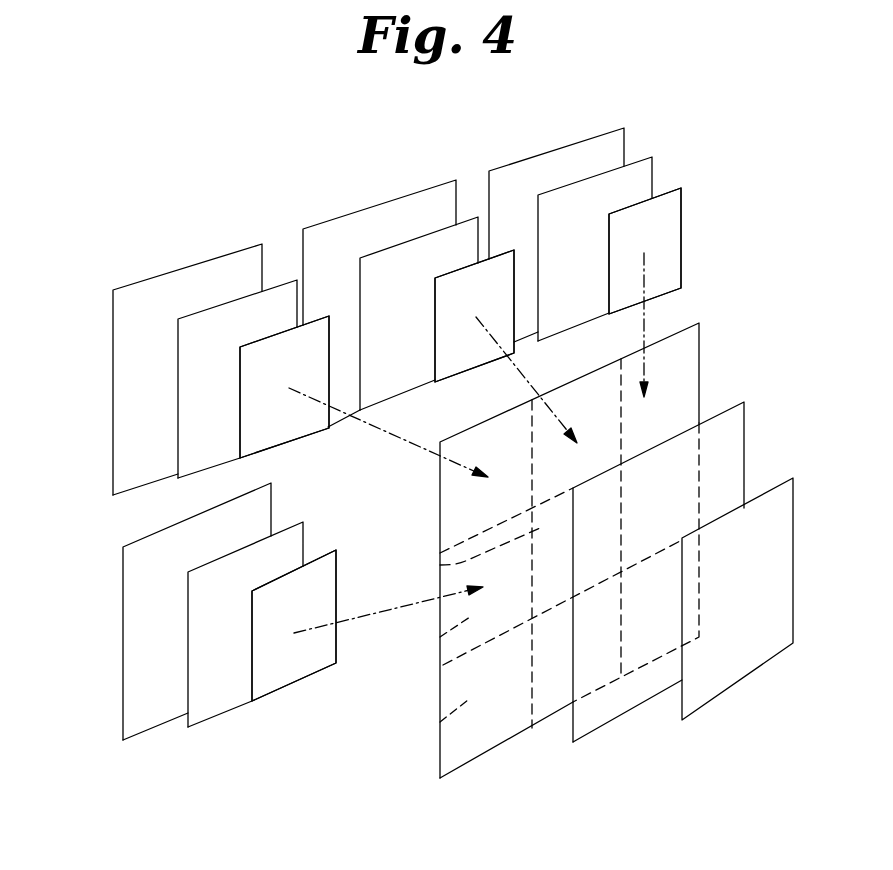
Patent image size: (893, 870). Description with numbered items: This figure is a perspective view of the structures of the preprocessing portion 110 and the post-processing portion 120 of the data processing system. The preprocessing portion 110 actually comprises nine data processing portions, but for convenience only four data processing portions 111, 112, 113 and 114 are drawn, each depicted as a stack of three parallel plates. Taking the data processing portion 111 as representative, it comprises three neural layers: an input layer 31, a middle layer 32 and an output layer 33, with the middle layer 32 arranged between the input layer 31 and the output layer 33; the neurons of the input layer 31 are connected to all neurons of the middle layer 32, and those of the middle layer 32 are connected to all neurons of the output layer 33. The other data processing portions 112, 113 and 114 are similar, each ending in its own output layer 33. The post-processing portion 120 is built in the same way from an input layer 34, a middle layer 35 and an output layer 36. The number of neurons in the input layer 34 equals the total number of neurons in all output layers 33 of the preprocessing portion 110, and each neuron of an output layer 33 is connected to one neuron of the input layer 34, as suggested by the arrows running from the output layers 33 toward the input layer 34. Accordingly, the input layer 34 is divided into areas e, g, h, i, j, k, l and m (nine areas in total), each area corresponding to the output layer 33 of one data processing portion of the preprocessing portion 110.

The preprocessing portion 110 is at (80, 749).
The data processing portion 111 is at (637, 208).
The data processing portion 112 is at (397, 192).
The data processing portion 113 is at (205, 253).
The data processing portion 114 is at (158, 733).
The input layer 31 is at (547, 150).
The middle layer 32 is at (640, 158).
The output layer 33 is at (682, 228).
The input layer 34 is at (440, 763).
The middle layer 35 is at (573, 743).
The output layer 36 is at (706, 705).
The post-processing portion 120 is at (592, 581).
The area e is at (687, 386).
The area h is at (690, 482).
The area k is at (658, 635).
The area g is at (440, 495).
The area i is at (440, 563).
The area j is at (440, 645).
The area l is at (553, 700).
The area m is at (440, 726).